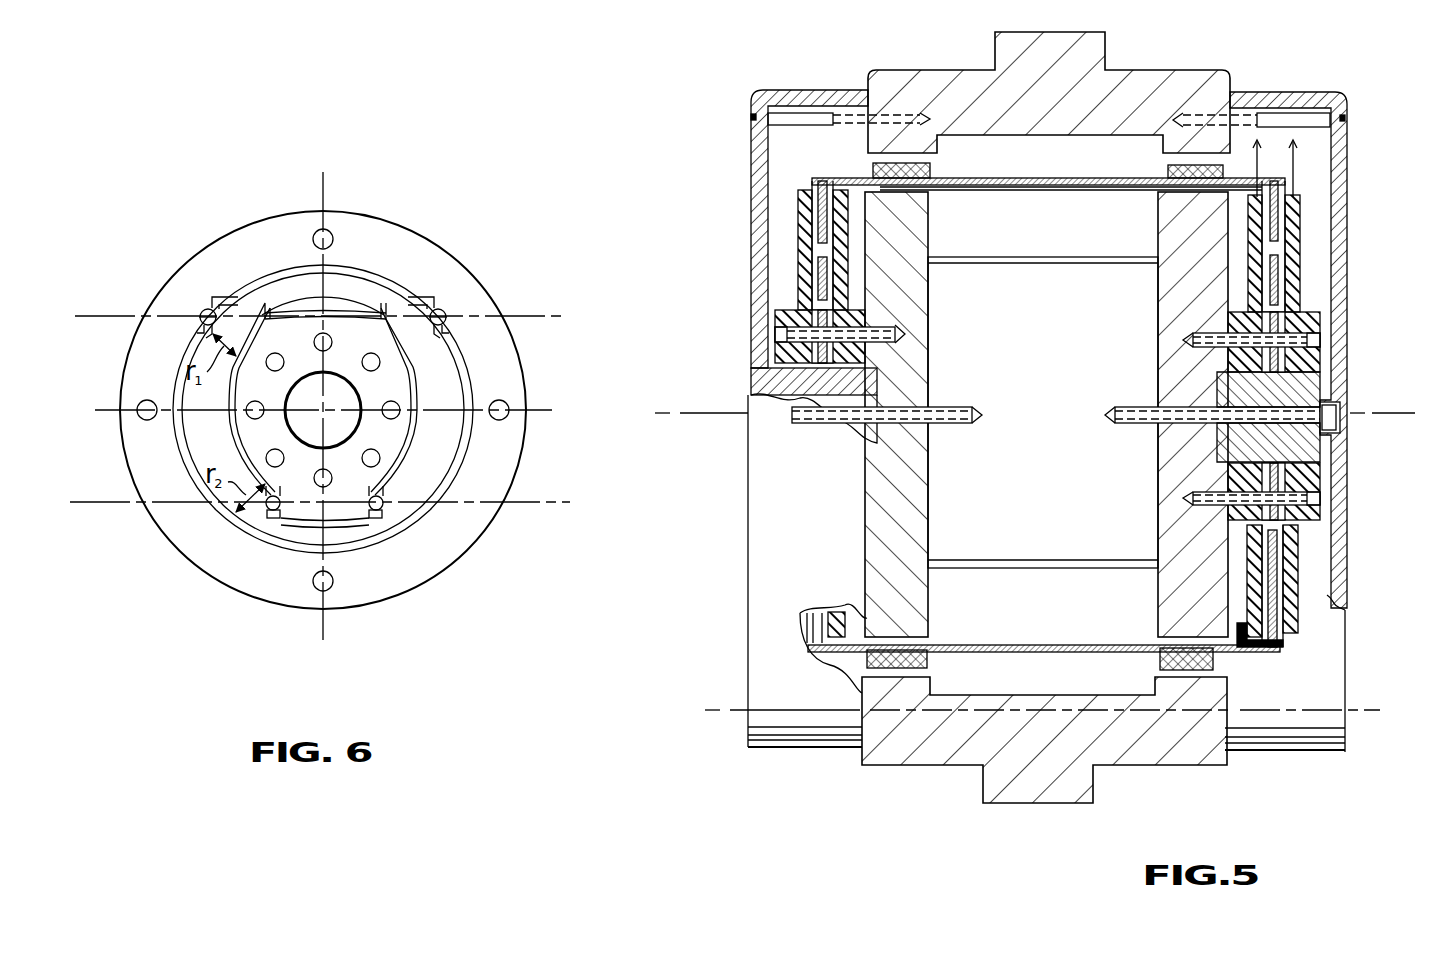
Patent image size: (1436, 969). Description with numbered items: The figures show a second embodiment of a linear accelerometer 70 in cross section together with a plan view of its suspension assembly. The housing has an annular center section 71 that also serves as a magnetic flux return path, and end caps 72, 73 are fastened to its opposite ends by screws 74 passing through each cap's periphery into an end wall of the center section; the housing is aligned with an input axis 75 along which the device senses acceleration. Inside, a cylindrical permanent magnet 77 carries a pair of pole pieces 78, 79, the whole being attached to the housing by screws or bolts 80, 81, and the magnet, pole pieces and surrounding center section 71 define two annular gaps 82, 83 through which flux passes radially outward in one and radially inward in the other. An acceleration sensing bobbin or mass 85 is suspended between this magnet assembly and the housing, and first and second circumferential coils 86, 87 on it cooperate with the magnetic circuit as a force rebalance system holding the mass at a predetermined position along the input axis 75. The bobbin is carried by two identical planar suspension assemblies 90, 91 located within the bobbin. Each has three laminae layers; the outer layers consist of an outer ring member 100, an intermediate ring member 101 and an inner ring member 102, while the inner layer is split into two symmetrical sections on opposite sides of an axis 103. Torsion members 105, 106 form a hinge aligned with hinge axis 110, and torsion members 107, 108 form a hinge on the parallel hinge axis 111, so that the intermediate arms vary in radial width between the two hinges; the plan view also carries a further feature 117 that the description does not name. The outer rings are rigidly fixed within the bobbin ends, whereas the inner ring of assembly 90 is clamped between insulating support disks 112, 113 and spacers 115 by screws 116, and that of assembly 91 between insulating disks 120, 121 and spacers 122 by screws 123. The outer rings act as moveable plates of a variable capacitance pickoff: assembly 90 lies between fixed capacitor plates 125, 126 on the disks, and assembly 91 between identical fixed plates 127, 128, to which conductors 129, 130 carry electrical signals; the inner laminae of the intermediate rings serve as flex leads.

In FIG. 5, the accelerometer 70 is at (1198, 57).
In FIG. 5, the annular center section 71 is at (946, 70).
In FIG. 5, the end cap 72 is at (751, 168).
In FIG. 5, the end cap 73 is at (1350, 152).
In FIG. 5, the screws 74 is at (752, 106).
In FIG. 5, the input axis 75 is at (1372, 418).
In FIG. 5, the cylindrical permanent magnet 77 is at (1046, 272).
In FIG. 5, the pole piece 78 is at (928, 603).
In FIG. 5, the pole piece 79 is at (1157, 603).
In FIG. 5, the screw or bolt 80 is at (751, 385).
In FIG. 5, the screw or bolt 81 is at (1306, 410).
In FIG. 5, the annular gap 82 is at (934, 672).
In FIG. 5, the annular gap 83 is at (1152, 672).
In FIG. 5, the bobbin or mass 85 is at (812, 658).
In FIG. 5, the first circumferential coil 86 is at (890, 668).
In FIG. 5, the second circumferential coil 87 is at (1180, 670).
In FIG. 6, the suspension assembly 90 is at (488, 235).
In FIG. 5, the suspension assembly 90 is at (795, 182).
In FIG. 5, the suspension assembly 91 is at (1296, 650).
In FIG. 6, the outer ring member 100 is at (463, 303).
In FIG. 5, the outer ring member 100 is at (822, 214).
In FIG. 6, the intermediate ring member 101 is at (452, 474).
In FIG. 5, the intermediate ring member 101 is at (818, 282).
In FIG. 6, the inner ring member 102 is at (300, 316).
In FIG. 5, the inner ring member 102 is at (850, 310).
In FIG. 6, the axis 103 is at (326, 186).
In FIG. 6, the torsion member 105 is at (205, 306).
In FIG. 6, the torsion member 106 is at (444, 306).
In FIG. 6, the torsion member 107 is at (280, 512).
In FIG. 6, the torsion member 108 is at (370, 512).
In FIG. 6, the hinge axis 110 is at (516, 317).
In FIG. 6, the hinge axis 111 is at (103, 503).
In FIG. 5, the insulating support disk 112 is at (806, 258).
In FIG. 5, the insulating support disk 113 is at (858, 194).
In FIG. 5, the spacers 115 is at (862, 352).
In FIG. 5, the screws 116 is at (778, 325).
In FIG. 6, the holes 117 is at (380, 456).
In FIG. 5, the insulating disk 120 is at (1240, 627).
In FIG. 5, the insulating disk 121 is at (1300, 575).
In FIG. 5, the spacers 122 is at (1308, 475).
In FIG. 5, the screws 123 is at (1340, 345).
In FIG. 5, the fixed capacitor plate 125 is at (878, 200).
In FIG. 5, the fixed capacitor plate 126 is at (800, 240).
In FIG. 5, the fixed capacitor plate 127 is at (1300, 216).
In FIG. 5, the fixed capacitor plate 128 is at (1266, 216).
In FIG. 5, the conductor 129 is at (1270, 150).
In FIG. 5, the conductor 130 is at (1302, 150).